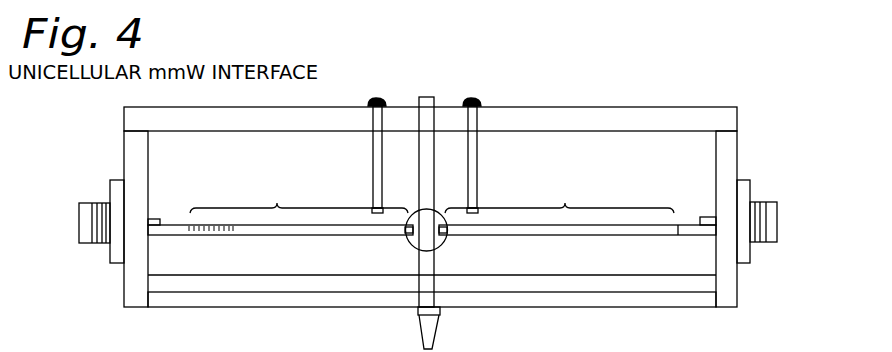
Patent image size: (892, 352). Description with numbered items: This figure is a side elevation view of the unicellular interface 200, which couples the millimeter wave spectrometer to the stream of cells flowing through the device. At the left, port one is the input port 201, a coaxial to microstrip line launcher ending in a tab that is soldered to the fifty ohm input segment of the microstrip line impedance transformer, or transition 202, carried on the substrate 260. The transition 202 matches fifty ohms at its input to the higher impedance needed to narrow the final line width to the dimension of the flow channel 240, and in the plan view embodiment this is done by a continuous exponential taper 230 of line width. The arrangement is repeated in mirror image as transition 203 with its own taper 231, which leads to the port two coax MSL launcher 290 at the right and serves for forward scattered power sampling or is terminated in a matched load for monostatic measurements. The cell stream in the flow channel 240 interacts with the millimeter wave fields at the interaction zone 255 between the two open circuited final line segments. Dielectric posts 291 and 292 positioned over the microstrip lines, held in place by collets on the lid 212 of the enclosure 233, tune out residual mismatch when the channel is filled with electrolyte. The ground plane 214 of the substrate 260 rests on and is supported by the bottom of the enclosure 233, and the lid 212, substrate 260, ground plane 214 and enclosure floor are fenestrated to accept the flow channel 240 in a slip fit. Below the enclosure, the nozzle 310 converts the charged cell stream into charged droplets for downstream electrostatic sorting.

The unicellular interface 200 is at (573, 83).
The input port 201 is at (88, 244).
The microstrip line transition 202 is at (299, 197).
The microstrip line transition 203 is at (559, 197).
The lid 212 is at (183, 118).
The ground plane 214 is at (369, 283).
The taper 230 is at (273, 236).
The taper 231 is at (590, 236).
The enclosure 233 is at (738, 160).
The flow channel 240 is at (430, 96).
The interaction zone 255 is at (437, 247).
The substrate 260 is at (289, 265).
The coax MSL launcher 290 is at (768, 243).
The dielectric post 291 is at (376, 99).
The dielectric post 292 is at (475, 99).
The nozzle 310 is at (435, 338).